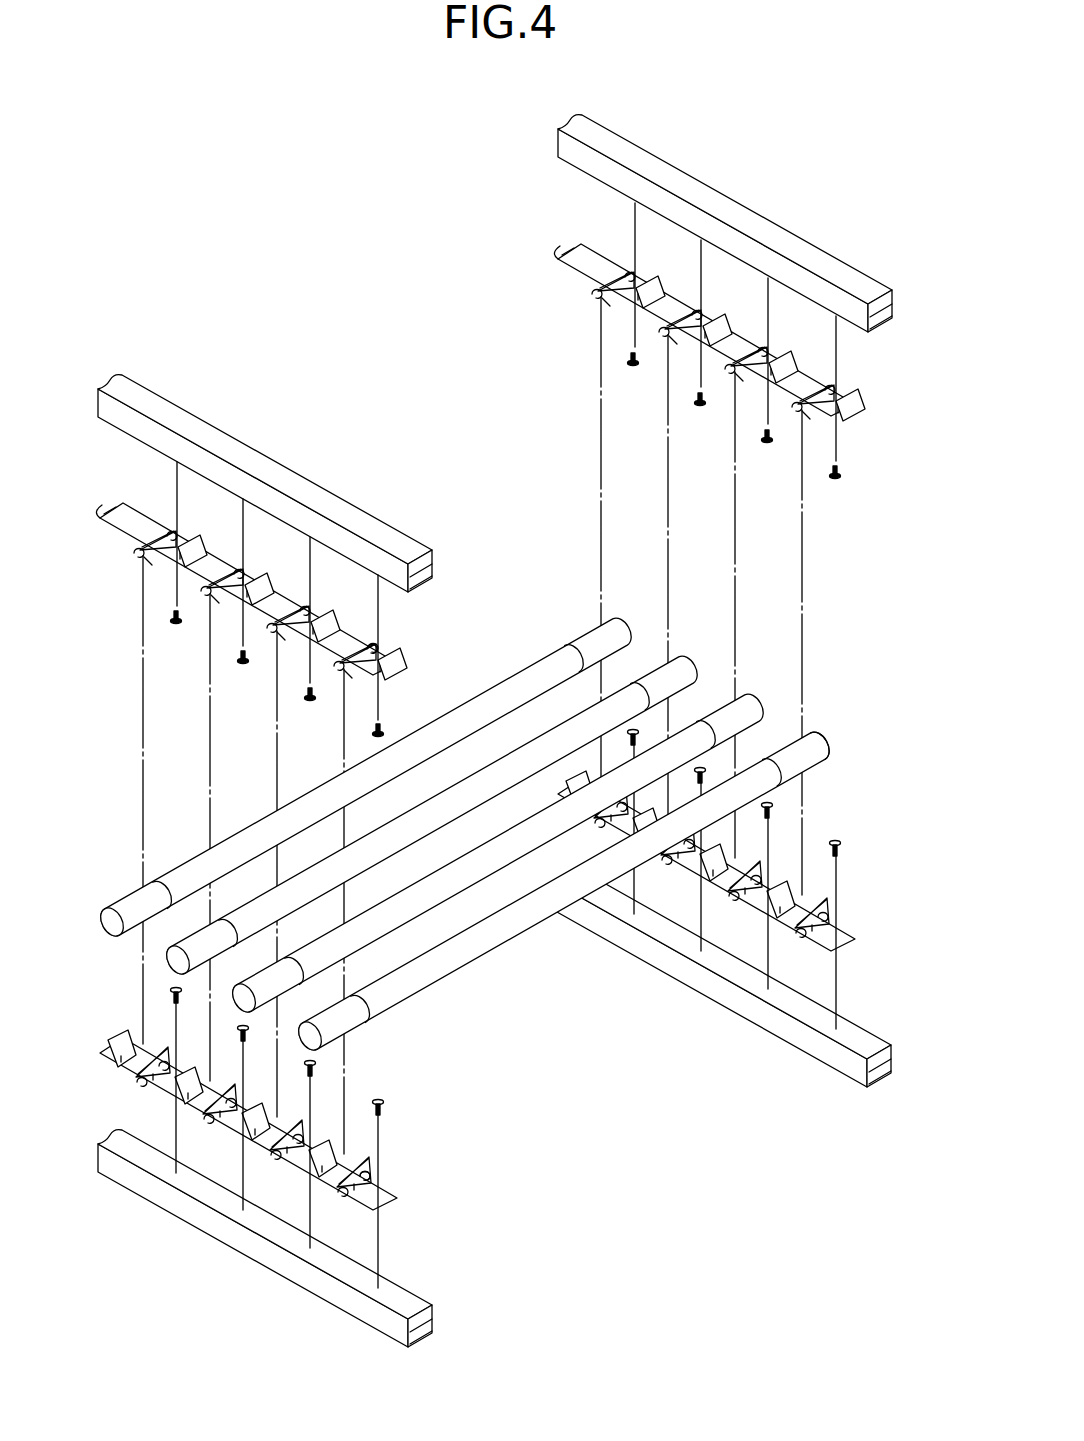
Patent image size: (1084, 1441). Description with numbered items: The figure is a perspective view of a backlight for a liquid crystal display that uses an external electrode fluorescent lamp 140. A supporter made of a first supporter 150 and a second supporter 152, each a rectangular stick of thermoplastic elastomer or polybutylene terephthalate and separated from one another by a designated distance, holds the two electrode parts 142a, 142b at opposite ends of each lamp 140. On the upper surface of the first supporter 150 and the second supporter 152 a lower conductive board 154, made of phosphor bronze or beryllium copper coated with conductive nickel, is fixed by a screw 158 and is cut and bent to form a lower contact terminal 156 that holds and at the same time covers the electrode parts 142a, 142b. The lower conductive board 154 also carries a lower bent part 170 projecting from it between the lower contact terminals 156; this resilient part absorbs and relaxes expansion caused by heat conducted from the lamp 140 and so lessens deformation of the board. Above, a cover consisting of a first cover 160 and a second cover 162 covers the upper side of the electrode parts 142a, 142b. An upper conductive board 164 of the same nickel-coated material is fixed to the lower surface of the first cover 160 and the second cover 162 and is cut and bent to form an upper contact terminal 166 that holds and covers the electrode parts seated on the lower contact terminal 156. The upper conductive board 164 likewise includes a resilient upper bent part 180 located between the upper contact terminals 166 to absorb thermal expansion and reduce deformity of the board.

The external electrode fluorescent lamp 140 is at (516, 843).
The electrode part 142a is at (355, 1019).
The electrode part 142b is at (840, 741).
The first supporter 150 is at (384, 1325).
The second supporter 152 is at (840, 1066).
The lower conductive board 154 is at (248, 1124).
The lower contact terminal 156 is at (123, 1068).
The screw 158 is at (168, 989).
The first cover 160 is at (208, 428).
The second cover 162 is at (664, 166).
The upper conductive board 164 is at (148, 522).
The upper contact terminal 166 is at (122, 548).
The lower bent part 170 is at (378, 1175).
The upper bent part 180 is at (380, 652).